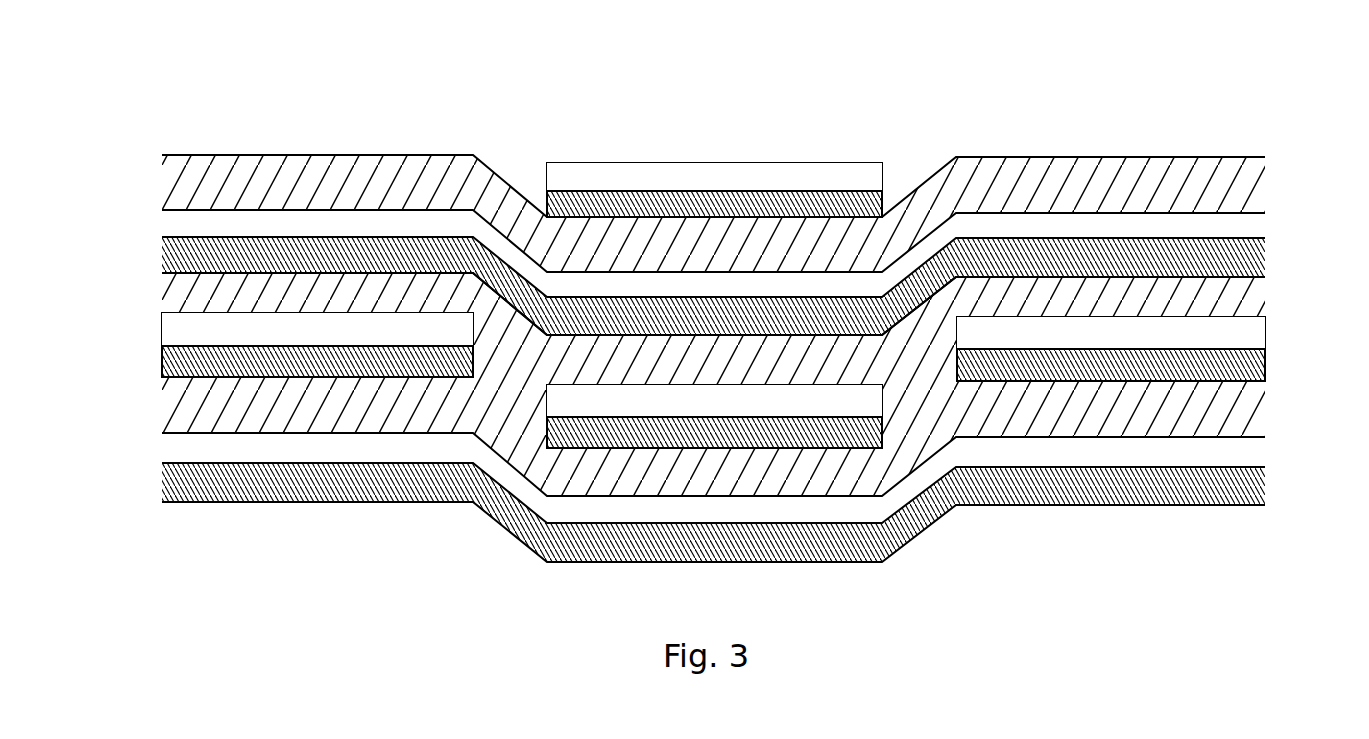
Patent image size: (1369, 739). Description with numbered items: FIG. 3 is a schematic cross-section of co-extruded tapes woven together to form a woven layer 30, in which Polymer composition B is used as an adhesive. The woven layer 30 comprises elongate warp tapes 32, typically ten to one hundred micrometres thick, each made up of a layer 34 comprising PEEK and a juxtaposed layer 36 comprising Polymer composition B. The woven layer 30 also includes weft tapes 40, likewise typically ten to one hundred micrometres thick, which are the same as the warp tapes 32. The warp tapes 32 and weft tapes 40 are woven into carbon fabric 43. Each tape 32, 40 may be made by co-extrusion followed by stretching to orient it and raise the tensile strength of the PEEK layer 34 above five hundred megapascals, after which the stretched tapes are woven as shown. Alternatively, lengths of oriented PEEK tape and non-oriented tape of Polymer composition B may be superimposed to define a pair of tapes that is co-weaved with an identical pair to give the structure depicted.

The woven layer 30 is at (734, 321).
The warp tape 32 is at (734, 294).
The layer comprising PEEK 34 is at (822, 180).
The layer comprising Polymer composition B 36 is at (857, 205).
The weft tape 40 is at (1272, 365).
The carbon fabric 43 is at (1230, 193).